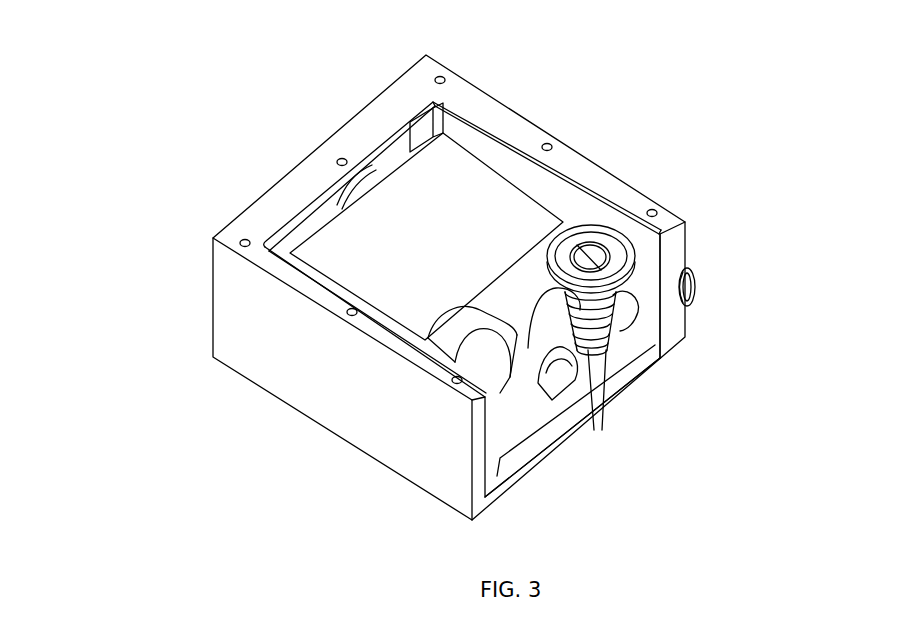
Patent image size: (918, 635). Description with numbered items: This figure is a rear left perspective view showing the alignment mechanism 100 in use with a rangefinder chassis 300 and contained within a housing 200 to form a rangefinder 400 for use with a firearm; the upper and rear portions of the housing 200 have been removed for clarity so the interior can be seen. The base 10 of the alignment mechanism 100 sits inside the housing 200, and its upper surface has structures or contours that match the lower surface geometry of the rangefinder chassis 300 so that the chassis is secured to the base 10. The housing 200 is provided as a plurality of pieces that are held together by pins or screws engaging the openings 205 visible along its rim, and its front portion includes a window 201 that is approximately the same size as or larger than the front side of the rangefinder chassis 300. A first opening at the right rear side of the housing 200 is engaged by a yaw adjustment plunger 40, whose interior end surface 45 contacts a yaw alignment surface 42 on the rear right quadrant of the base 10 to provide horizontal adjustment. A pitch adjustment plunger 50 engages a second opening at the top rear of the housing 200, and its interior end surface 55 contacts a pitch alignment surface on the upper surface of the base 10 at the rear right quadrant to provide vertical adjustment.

The base 10 is at (548, 425).
The yaw adjustment plunger 40 is at (697, 270).
The yaw alignment surface 42 is at (620, 360).
The interior end surface 45 is at (627, 323).
The pitch adjustment plunger 50 is at (612, 237).
The interior end surface 55 is at (592, 363).
The alignment mechanism 100 is at (675, 407).
The housing 200 is at (338, 392).
The window 201 is at (370, 163).
The openings 205 is at (240, 243).
The rangefinder chassis 300 is at (467, 200).
The rangefinder 400 is at (625, 67).